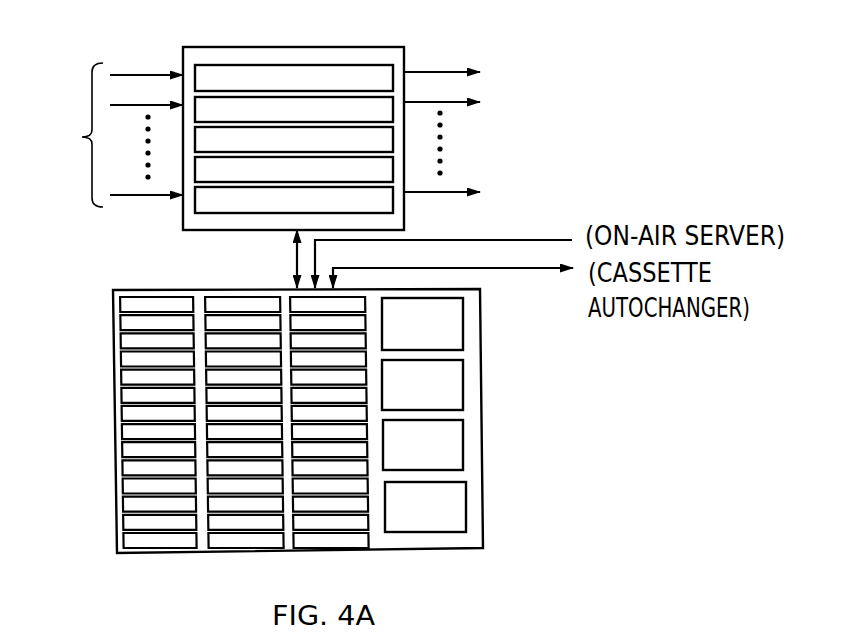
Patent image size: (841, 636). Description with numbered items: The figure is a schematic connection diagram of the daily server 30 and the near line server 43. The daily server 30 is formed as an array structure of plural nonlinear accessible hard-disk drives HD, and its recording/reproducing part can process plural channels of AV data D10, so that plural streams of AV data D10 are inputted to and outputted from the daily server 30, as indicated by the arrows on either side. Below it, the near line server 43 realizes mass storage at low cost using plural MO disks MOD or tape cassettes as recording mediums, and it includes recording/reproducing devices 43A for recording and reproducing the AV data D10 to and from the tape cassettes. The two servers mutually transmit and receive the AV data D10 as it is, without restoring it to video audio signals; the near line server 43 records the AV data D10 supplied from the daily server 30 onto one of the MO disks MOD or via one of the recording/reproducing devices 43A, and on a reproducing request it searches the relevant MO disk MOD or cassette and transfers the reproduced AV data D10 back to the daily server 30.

The daily server 30 is at (405, 45).
The hard-disk drive HD is at (318, 202).
The AV data D10 is at (293, 253).
The near line server 43 is at (480, 323).
The MO disk MOD is at (128, 305).
The recording/reproducing device 43A is at (453, 508).